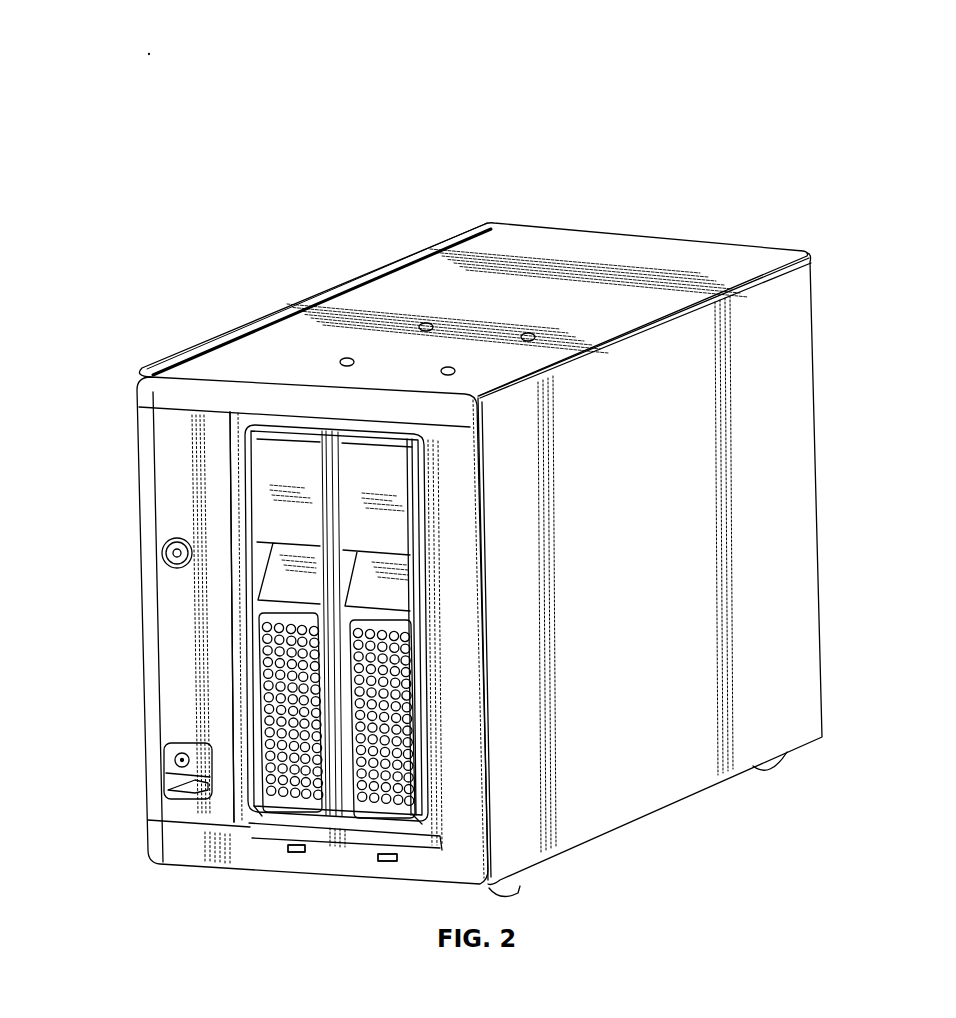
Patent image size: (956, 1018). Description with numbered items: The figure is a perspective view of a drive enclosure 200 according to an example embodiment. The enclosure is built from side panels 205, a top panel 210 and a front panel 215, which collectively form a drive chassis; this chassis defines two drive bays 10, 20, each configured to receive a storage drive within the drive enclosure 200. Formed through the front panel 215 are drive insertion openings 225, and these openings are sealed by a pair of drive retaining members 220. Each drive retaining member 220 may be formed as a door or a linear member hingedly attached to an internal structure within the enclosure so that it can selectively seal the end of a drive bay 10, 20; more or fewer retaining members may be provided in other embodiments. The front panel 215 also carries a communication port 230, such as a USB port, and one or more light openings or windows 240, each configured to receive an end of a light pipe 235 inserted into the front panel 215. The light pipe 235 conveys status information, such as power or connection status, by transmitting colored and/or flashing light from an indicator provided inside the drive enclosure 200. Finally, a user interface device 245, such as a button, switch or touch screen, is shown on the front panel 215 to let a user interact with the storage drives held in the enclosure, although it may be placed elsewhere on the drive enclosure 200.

The drive enclosure 200 is at (149, 54).
The side panels 205 is at (203, 341).
The top panel 210 is at (665, 252).
The front panel 215 is at (173, 858).
The drive retaining members 220 is at (268, 793).
The drive insertion openings 225 is at (237, 642).
The communication port 230 is at (163, 797).
The light pipe 235 is at (286, 863).
The light openings or windows 240 is at (296, 857).
The user interface device 245 is at (165, 568).
The drive bay 10 is at (268, 439).
The drive bay 20 is at (365, 440).